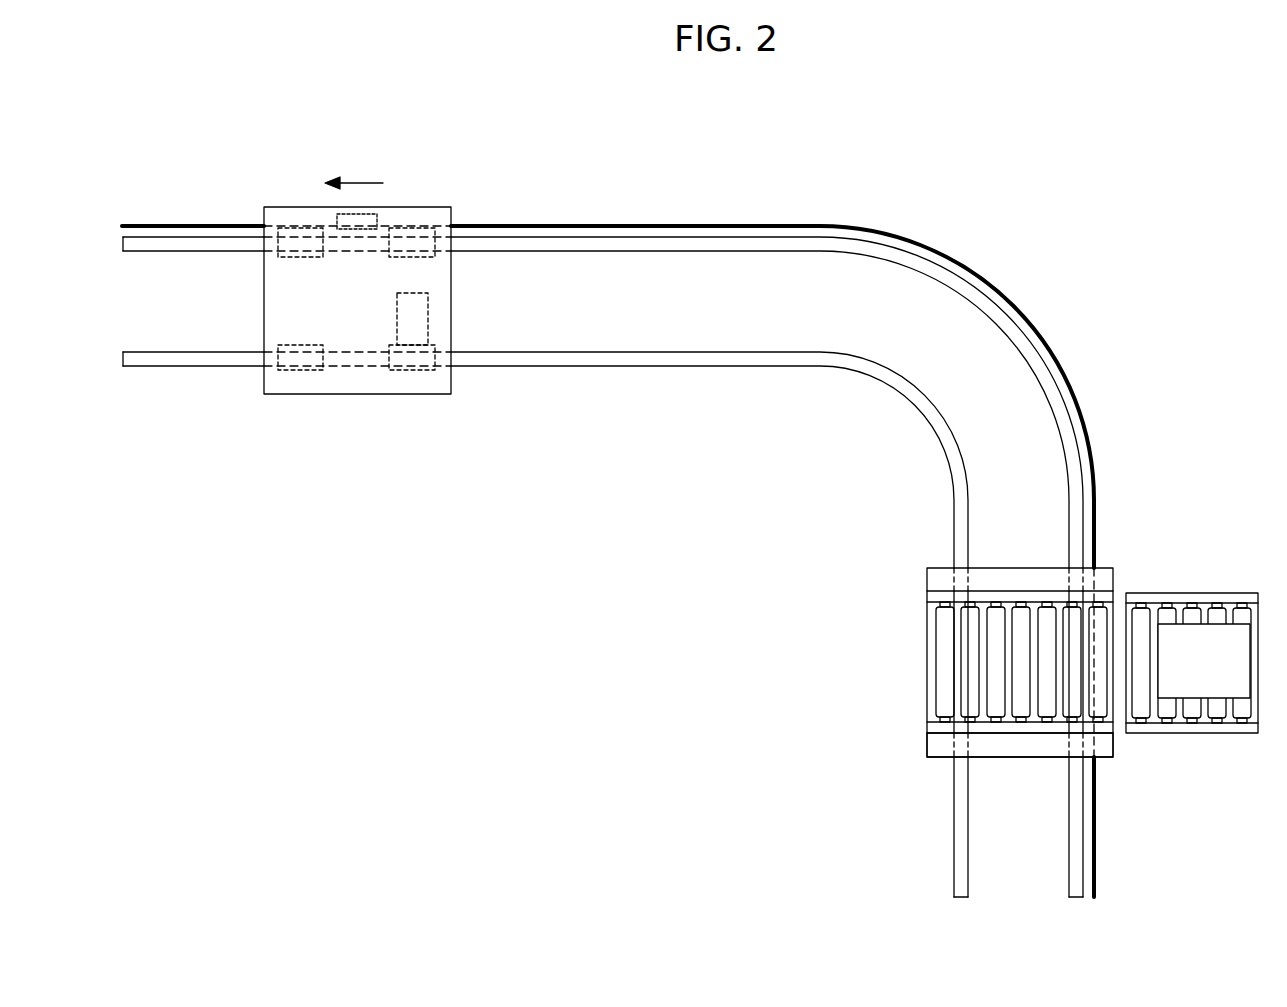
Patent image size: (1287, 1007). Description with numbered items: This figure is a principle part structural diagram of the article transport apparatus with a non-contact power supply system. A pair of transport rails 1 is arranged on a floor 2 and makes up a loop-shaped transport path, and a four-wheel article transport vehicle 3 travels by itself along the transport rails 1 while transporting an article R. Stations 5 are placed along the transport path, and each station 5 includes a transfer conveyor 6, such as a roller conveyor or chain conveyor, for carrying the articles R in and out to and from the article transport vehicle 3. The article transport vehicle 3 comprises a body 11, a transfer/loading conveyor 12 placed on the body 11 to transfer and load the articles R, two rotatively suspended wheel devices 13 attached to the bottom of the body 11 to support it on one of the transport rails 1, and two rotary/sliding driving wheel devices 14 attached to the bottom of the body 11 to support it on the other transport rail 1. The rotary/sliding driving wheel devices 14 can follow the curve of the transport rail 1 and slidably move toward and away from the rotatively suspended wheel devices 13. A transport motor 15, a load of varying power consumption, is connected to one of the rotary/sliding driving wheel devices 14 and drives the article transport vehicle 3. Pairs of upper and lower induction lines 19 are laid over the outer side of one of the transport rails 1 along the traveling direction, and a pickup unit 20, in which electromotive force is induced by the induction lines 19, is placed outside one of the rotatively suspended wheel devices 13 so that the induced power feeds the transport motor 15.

The transport rails 1 is at (960, 856).
The floor 2 is at (666, 579).
The article transport vehicle 3 is at (451, 221).
The station 5 is at (1193, 631).
The transfer conveyor 6 is at (1243, 617).
The article R is at (1196, 638).
The body 11 is at (921, 748).
The transfer/loading conveyor 12 is at (921, 677).
The rotatively suspended wheel devices 13 is at (300, 228).
The rotary/sliding driving wheel devices 14 is at (305, 370).
The transport motor 15 is at (428, 322).
The induction lines 19 is at (1088, 447).
The pickup unit 20 is at (377, 214).